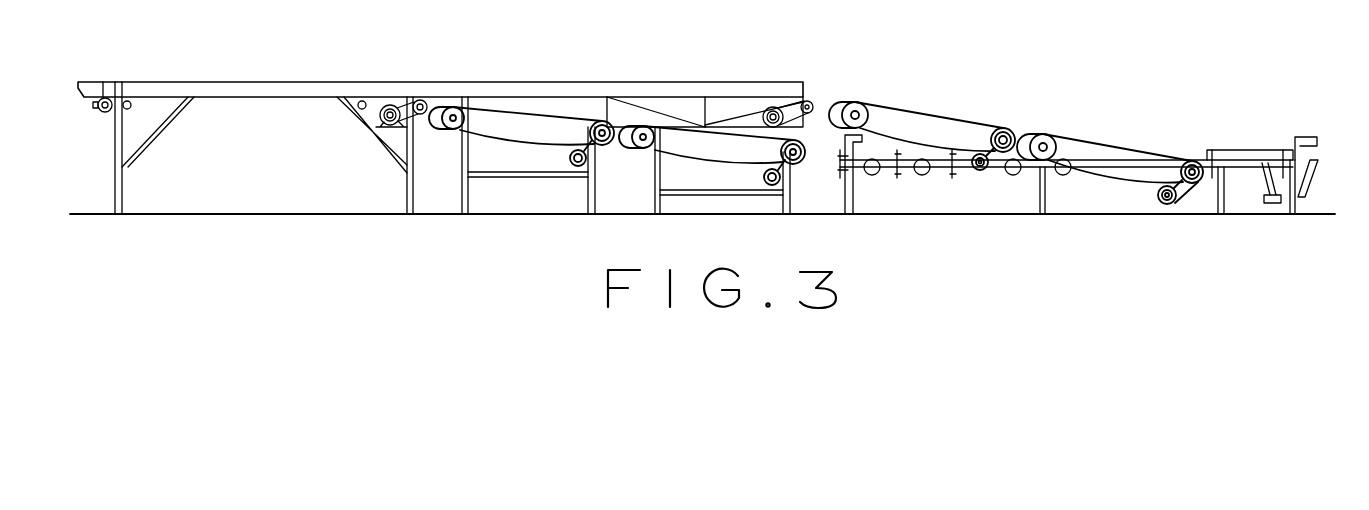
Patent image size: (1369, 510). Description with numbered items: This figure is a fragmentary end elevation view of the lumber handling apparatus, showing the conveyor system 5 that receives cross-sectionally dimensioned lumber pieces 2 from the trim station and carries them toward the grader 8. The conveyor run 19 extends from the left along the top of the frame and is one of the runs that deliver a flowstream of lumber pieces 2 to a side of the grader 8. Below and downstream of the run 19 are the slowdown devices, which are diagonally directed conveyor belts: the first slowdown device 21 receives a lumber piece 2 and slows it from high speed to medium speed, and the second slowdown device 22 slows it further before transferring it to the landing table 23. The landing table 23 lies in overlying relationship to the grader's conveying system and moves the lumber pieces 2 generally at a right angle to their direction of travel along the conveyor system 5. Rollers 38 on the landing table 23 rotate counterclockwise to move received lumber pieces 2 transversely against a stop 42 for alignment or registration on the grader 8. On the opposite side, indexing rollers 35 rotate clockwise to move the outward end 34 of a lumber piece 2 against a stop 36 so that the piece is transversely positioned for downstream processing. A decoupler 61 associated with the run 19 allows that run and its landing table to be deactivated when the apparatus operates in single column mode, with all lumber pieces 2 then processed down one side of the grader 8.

The conveyor system 5 is at (228, 78).
The decoupler 61 is at (436, 102).
The conveyor run 19 is at (658, 82).
The first slowdown device 21 is at (530, 115).
The second slowdown device 22 is at (713, 127).
The stop 42 is at (842, 142).
The landing table 23 is at (963, 170).
The rollers 38 is at (925, 178).
The grader 8 is at (1000, 174).
The lumber pieces 2 is at (1233, 153).
The stop 36 is at (1297, 137).
The outward end 34 is at (1317, 153).
The indexing rollers 35 is at (1255, 167).